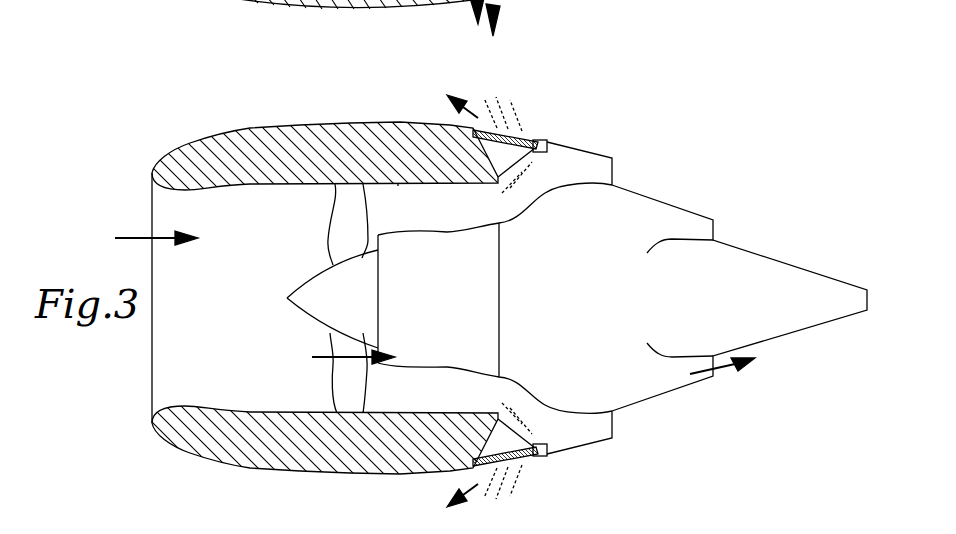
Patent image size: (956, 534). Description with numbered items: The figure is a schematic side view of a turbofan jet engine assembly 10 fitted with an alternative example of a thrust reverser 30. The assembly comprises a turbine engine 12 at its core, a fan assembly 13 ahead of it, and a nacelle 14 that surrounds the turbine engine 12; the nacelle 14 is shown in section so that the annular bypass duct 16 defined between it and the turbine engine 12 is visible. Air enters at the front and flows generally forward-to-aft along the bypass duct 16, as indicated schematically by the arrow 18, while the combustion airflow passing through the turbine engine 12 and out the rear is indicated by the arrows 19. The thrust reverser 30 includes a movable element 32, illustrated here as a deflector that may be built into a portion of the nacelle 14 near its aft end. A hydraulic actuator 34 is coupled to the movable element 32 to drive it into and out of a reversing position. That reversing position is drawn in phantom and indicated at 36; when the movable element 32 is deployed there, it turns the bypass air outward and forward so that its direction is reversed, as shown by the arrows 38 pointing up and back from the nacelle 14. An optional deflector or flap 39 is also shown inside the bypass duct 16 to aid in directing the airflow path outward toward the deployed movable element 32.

The turbofan jet engine assembly 10 is at (175, 128).
The turbine engine 12 is at (442, 309).
The fan assembly 13 is at (352, 208).
The nacelle 14 is at (250, 128).
The annular bypass duct 16 is at (407, 210).
The bypass airflow arrow 18 is at (131, 236).
The combustion airflow arrows 19 is at (318, 362).
The thrust reverser 30 is at (543, 127).
The movable element 32 is at (516, 130).
The hydraulic actuator 34 is at (548, 144).
The reversing position 36 is at (518, 126).
The reversed airflow arrows 38 is at (492, 126).
The deflector or flap 39 is at (532, 181).